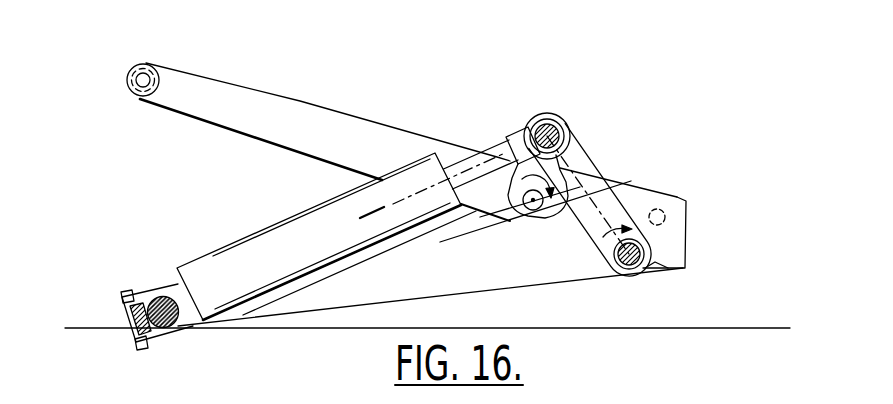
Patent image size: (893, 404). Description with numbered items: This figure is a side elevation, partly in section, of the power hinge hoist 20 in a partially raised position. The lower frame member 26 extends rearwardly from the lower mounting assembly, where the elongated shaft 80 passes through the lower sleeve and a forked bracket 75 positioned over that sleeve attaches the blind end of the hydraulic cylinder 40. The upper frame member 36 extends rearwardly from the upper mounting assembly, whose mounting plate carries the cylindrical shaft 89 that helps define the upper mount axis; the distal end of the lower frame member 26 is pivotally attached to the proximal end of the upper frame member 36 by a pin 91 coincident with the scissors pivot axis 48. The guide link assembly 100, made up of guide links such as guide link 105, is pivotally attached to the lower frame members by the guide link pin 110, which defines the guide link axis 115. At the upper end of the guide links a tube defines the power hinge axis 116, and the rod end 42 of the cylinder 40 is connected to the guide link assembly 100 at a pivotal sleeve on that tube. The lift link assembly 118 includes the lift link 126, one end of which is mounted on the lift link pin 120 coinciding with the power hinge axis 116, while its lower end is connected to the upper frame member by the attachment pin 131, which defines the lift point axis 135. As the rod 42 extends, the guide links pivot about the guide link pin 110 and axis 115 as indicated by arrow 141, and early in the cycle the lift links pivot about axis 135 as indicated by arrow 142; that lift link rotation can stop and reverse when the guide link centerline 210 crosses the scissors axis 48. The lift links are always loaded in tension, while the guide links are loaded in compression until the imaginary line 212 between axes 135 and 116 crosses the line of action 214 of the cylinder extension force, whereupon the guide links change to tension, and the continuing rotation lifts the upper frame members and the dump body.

The hoist 20 is at (217, 62).
The cylindrical shaft 89 is at (128, 72).
The upper frame member 36 is at (253, 90).
The hydraulic cylinder 40 is at (268, 228).
The line of action or axis of the cylinder extension force 214 is at (380, 213).
The rod end 42 is at (452, 168).
The lift link 126 is at (458, 160).
The arrow 142 is at (513, 137).
The power hinge axis 116 is at (562, 124).
The lift link pin 120 is at (560, 124).
The guide link assembly 100 is at (588, 138).
The imaginary line 212 is at (596, 170).
The guide link 105 is at (594, 176).
The attachment pin 131 is at (631, 181).
The pin 91 is at (667, 215).
The scissors pivot axis 48 is at (666, 225).
The guide link pin 110 is at (661, 268).
The guide link axis 115 is at (620, 270).
The arrow 141 is at (603, 237).
The guide link centerline 210 is at (603, 243).
The lift point axis 135 is at (497, 205).
The lift link assembly 118 is at (464, 217).
The lower frame member 26 is at (473, 295).
The elongated shaft 80 is at (168, 328).
The forked bracket 75 is at (133, 338).